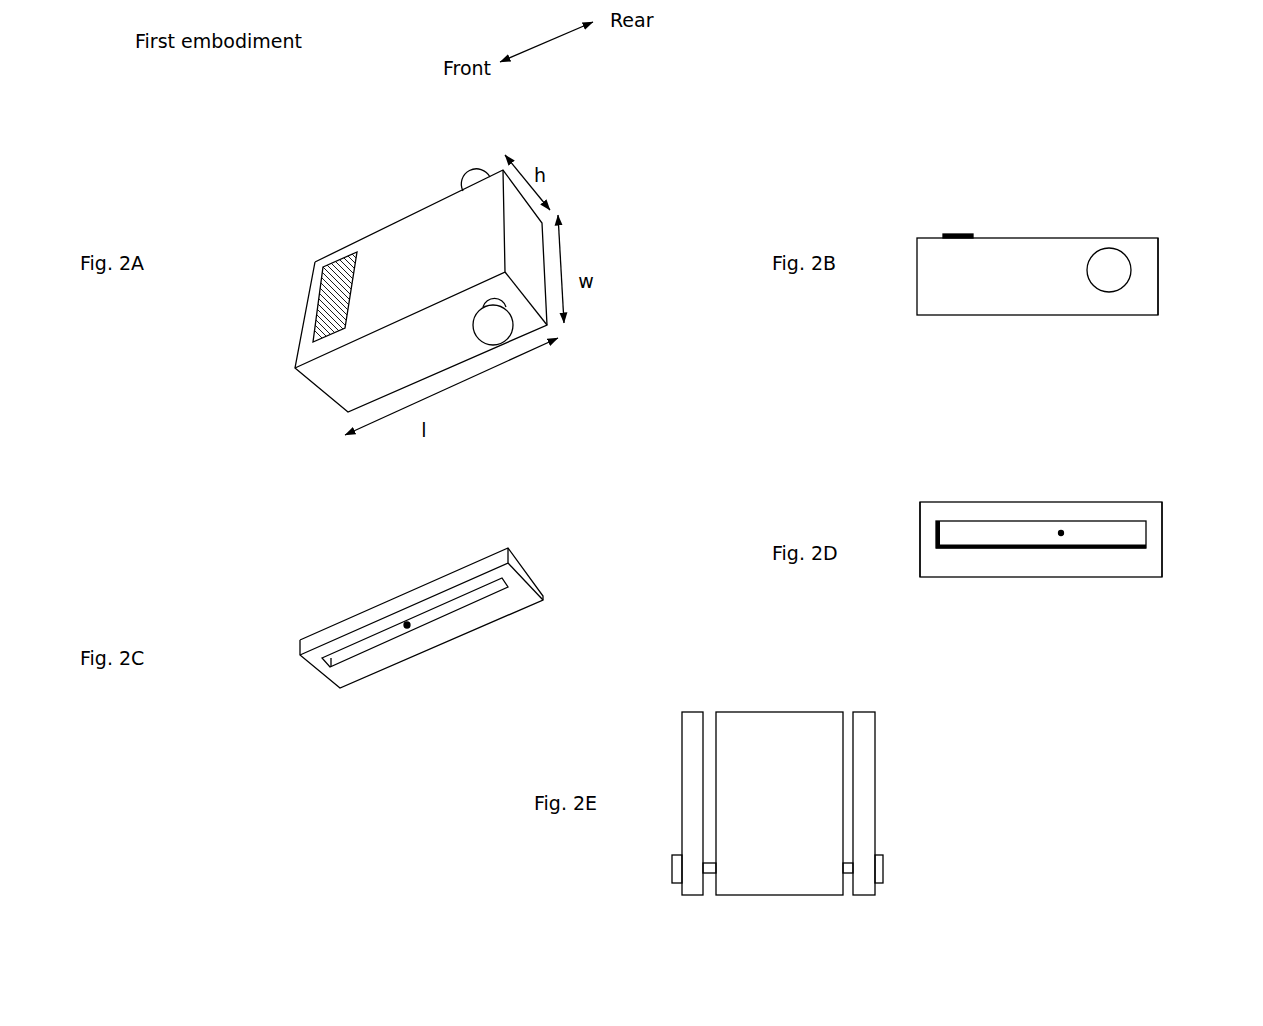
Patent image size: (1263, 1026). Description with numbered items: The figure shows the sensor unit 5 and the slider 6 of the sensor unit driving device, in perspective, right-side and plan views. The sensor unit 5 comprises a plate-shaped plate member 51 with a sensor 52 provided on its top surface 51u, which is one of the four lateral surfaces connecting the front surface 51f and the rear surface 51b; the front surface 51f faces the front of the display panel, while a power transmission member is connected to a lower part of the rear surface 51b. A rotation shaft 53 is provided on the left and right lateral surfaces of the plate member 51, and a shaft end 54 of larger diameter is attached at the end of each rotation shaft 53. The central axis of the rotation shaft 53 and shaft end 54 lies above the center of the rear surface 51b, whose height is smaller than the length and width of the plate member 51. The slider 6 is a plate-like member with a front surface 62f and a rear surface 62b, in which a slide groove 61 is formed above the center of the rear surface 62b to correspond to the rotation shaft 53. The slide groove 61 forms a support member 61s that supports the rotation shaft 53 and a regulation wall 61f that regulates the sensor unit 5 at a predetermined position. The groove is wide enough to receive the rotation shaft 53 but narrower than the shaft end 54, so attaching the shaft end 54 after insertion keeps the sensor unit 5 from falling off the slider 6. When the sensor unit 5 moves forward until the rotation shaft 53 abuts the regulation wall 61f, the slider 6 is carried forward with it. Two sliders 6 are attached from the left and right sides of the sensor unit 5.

In FIG. 2A, the sensor unit 5 is at (572, 175).
In FIG. 2B, the sensor unit 5 is at (1173, 173).
In FIG. 2A, the plate member 51 is at (287, 290).
In FIG. 2A, the top surface 51u is at (432, 215).
In FIG. 2E, the top surface 51u is at (779, 803).
In FIG. 2A, the front surface 51f is at (323, 392).
In FIG. 2A, the rear surface 51b is at (532, 246).
In FIG. 2B, the rear surface 51b is at (1158, 280).
In FIG. 2A, the sensor 52 is at (333, 277).
In FIG. 2B, the sensor 52 is at (955, 235).
In FIG. 2A, the rotation shaft 53 is at (495, 298).
In FIG. 2E, the rotation shaft 53 is at (712, 873).
In FIG. 2A, the shaft end 54 is at (480, 173).
In FIG. 2B, the shaft end 54 is at (1110, 267).
In FIG. 2E, the shaft end 54 is at (673, 872).
In FIG. 2C, the slider 6 is at (578, 527).
In FIG. 2D, the slider 6 is at (1135, 477).
In FIG. 2E, the slider 6 is at (680, 752).
In FIG. 2C, the slide groove 61 is at (405, 628).
In FIG. 2D, the slide groove 61 is at (1055, 537).
In FIG. 2D, the regulation wall 61f is at (940, 537).
In FIG. 2D, the support member 61s is at (1035, 550).
In FIG. 2C, the front surface of slider 62f is at (315, 670).
In FIG. 2D, the front surface of slider 62f is at (920, 538).
In FIG. 2C, the rear surface of slider 62b is at (527, 573).
In FIG. 2D, the rear surface of slider 62b is at (1162, 543).